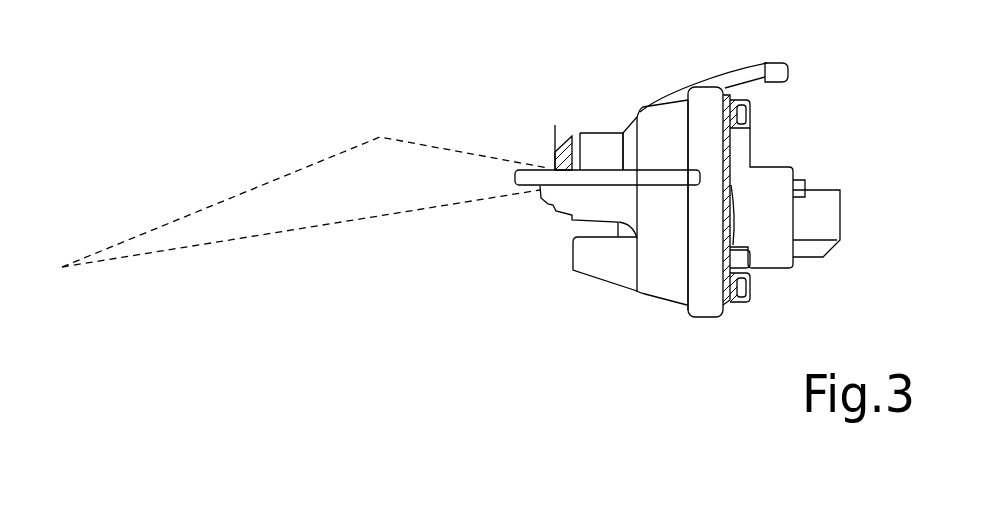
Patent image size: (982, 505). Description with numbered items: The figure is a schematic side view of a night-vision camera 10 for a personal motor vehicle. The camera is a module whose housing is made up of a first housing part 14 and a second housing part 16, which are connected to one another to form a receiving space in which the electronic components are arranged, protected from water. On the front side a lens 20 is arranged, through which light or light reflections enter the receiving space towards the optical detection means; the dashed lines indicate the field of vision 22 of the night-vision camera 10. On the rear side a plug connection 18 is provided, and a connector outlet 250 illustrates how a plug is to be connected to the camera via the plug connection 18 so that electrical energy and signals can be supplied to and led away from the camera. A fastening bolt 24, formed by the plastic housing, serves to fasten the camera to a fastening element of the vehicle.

The night-vision camera 10 is at (672, 345).
The first housing part 14 is at (656, 118).
The second housing part 16 is at (738, 155).
The plug connection 18 is at (767, 275).
The lens 20 is at (555, 125).
The field of vision 22 is at (427, 212).
The fastening bolt 24 is at (787, 63).
The connector outlet 250 is at (825, 252).